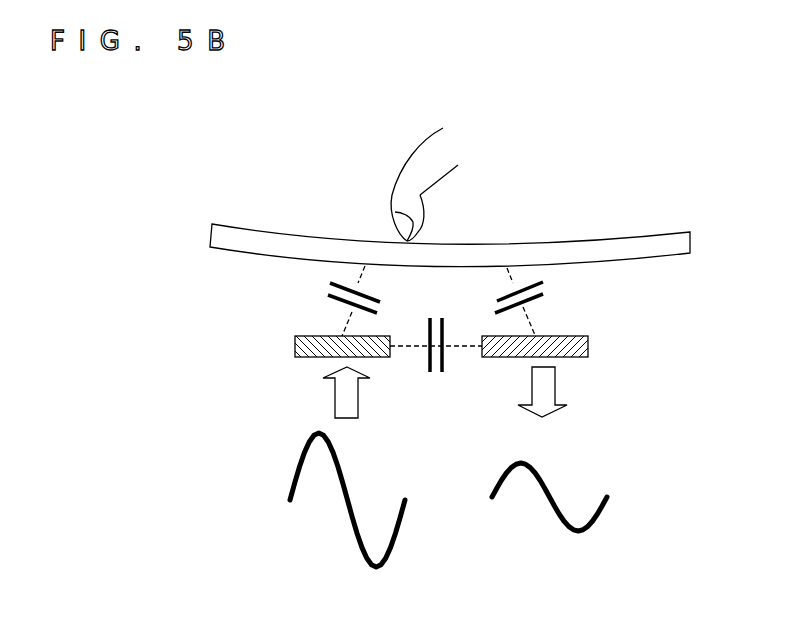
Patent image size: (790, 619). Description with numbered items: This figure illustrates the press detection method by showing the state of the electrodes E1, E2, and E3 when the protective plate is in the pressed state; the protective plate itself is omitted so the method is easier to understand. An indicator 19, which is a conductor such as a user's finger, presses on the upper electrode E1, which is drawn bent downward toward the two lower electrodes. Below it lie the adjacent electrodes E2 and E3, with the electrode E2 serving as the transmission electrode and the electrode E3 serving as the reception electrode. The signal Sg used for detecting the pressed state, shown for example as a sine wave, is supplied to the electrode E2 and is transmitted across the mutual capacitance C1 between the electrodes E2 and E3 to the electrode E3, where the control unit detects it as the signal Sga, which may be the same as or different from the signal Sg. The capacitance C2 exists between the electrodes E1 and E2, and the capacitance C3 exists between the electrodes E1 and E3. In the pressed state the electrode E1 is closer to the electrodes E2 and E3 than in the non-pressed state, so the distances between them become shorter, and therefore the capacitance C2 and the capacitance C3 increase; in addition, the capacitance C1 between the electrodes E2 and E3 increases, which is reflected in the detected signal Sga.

The indicator 19 is at (422, 138).
The electrode E1 is at (209, 237).
The electrode E2 is at (294, 348).
The electrode E3 is at (590, 346).
The capacitance C1 is at (436, 330).
The capacitance C2 is at (339, 301).
The capacitance C3 is at (536, 301).
The signal Sg is at (345, 490).
The signal Sga is at (545, 488).